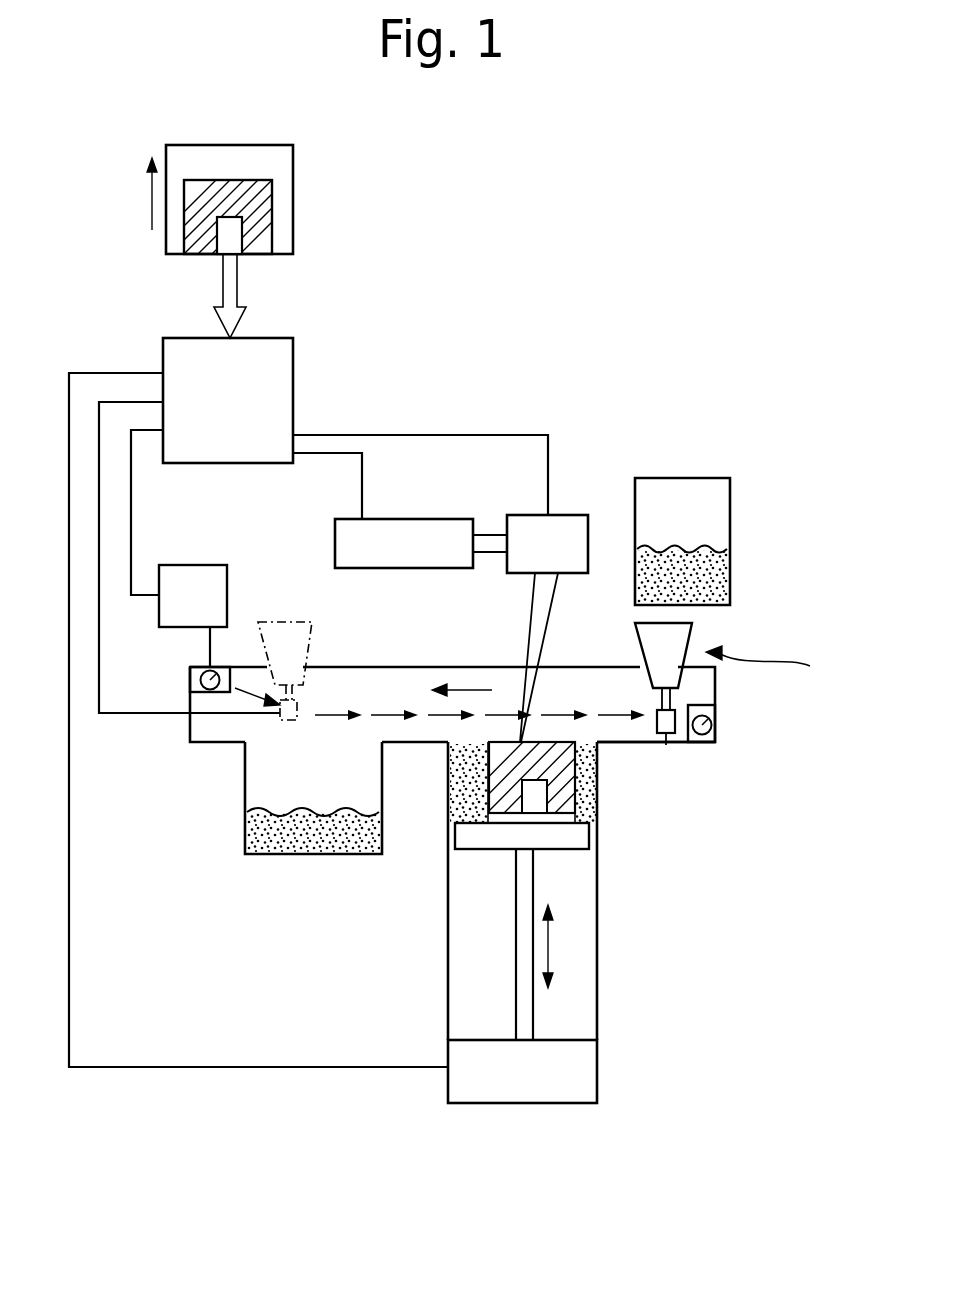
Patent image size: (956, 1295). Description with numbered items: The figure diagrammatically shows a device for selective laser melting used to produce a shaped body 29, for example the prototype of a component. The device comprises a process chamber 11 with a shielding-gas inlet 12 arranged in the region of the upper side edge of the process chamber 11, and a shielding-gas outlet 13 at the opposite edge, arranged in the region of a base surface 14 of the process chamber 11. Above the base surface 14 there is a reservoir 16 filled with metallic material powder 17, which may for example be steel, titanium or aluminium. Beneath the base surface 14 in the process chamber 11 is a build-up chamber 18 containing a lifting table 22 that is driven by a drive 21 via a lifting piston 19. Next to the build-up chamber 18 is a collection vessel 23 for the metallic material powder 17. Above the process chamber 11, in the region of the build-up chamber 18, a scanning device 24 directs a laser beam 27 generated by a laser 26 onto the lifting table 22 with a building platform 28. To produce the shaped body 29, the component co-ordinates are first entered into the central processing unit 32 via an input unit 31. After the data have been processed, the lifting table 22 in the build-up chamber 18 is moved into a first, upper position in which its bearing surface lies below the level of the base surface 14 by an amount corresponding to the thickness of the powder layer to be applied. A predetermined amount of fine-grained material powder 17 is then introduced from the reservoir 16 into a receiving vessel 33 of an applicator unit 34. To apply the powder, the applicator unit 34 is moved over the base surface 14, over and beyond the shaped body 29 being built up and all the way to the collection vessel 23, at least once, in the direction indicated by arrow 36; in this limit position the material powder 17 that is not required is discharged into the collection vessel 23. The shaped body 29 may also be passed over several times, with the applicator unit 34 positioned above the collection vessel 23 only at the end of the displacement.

The process chamber 11 is at (408, 687).
The shielding-gas inlet 12 is at (190, 678).
The shielding-gas outlet 13 is at (712, 722).
The base surface 14 is at (640, 745).
The reservoir 16 is at (712, 502).
The metallic material powder 17 is at (712, 575).
The build-up chamber 18 is at (606, 800).
The lifting piston 19 is at (533, 1003).
The drive 21 is at (528, 1082).
The lifting table 22 is at (563, 840).
The collection vessel 23 is at (258, 770).
The scanning device 24 is at (570, 525).
The laser 26 is at (390, 530).
The laser beam 27 is at (488, 543).
The building platform 28 is at (523, 817).
The shaped body 29 is at (467, 788).
The input unit 31 is at (293, 205).
The central processing unit 32 is at (267, 368).
The receiving vessel 33 is at (688, 637).
The applicator unit 34 is at (779, 662).
The arrow 36 is at (468, 690).